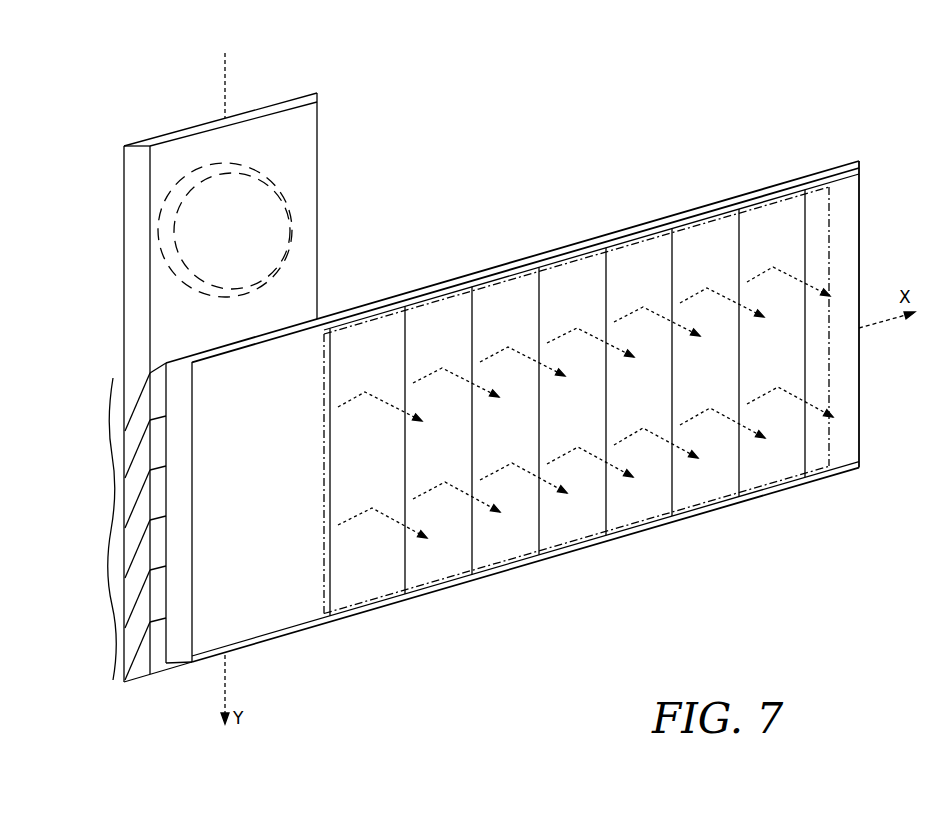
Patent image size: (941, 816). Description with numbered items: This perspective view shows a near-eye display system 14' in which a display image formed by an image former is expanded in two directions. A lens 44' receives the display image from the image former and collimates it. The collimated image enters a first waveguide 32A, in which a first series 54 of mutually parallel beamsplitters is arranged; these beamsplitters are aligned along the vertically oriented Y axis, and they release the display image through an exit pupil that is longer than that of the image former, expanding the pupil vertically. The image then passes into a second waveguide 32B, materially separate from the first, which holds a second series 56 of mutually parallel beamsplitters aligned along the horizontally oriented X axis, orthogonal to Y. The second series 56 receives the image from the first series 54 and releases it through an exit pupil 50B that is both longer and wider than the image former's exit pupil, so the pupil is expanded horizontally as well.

The near-eye display system 14' is at (512, 355).
The first waveguide 32A is at (317, 102).
The second waveguide 32B is at (860, 205).
The lens 44' is at (225, 230).
The exit pupil 50B is at (322, 470).
The first series of mutually parallel beamsplitters 54 is at (181, 487).
The second series of mutually parallel beamsplitters 56 is at (865, 485).